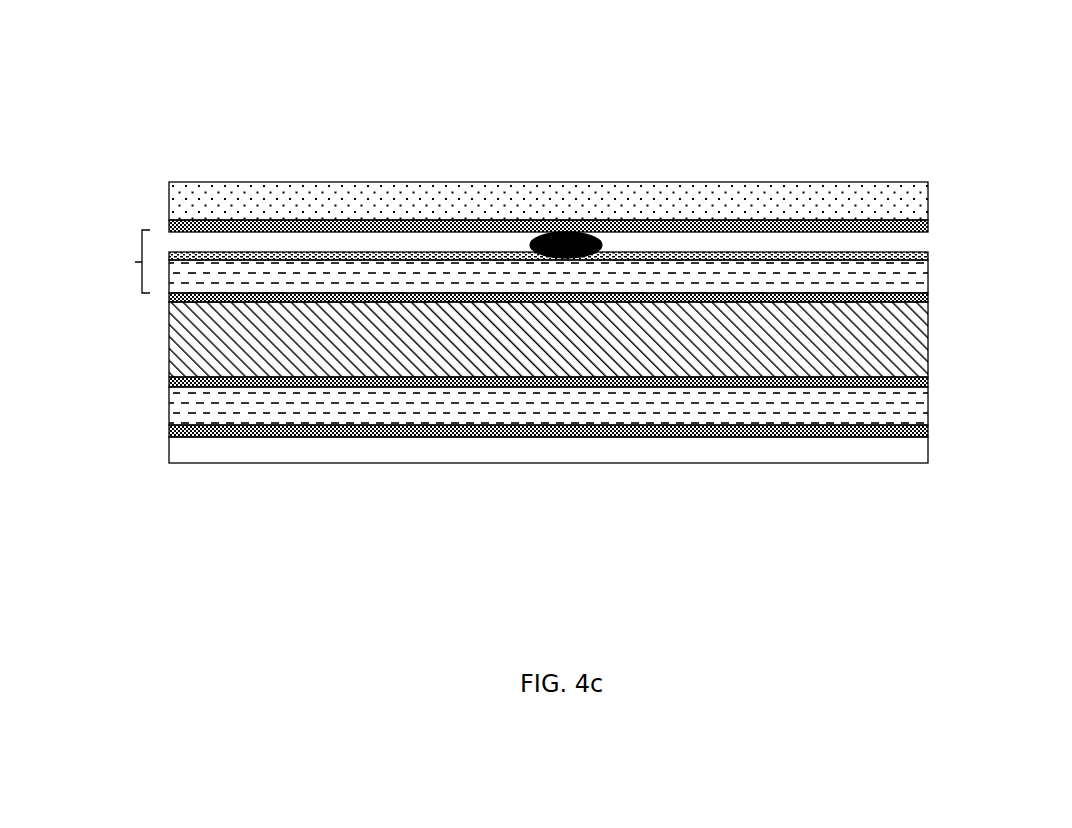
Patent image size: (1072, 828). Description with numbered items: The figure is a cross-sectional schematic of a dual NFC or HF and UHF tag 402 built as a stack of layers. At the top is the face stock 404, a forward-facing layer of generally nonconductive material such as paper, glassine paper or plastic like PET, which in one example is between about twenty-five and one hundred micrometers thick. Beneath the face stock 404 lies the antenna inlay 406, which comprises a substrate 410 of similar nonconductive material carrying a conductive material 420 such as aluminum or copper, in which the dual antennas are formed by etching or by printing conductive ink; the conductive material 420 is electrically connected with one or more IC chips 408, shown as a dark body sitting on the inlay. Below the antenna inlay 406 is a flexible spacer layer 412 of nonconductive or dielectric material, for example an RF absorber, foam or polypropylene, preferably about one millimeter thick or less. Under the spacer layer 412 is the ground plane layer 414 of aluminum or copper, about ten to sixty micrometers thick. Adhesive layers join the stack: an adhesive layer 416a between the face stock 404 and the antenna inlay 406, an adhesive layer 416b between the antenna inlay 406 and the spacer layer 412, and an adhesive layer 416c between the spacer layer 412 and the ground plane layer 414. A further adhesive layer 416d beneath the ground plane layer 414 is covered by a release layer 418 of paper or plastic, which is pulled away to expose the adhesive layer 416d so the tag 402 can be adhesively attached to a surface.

The tag 402 is at (853, 88).
The face stock 404 is at (928, 184).
The antenna inlay 406 is at (135, 262).
The IC chip 408 is at (540, 236).
The substrate 410 is at (928, 256).
The spacer layer 412 is at (928, 340).
The ground plane layer 414 is at (928, 404).
The adhesive layer 416a is at (928, 226).
The adhesive layer 416b is at (928, 297).
The adhesive layer 416c is at (928, 381).
The adhesive layer 416d is at (928, 437).
The release layer 418 is at (169, 451).
The conductive material 420 is at (177, 252).